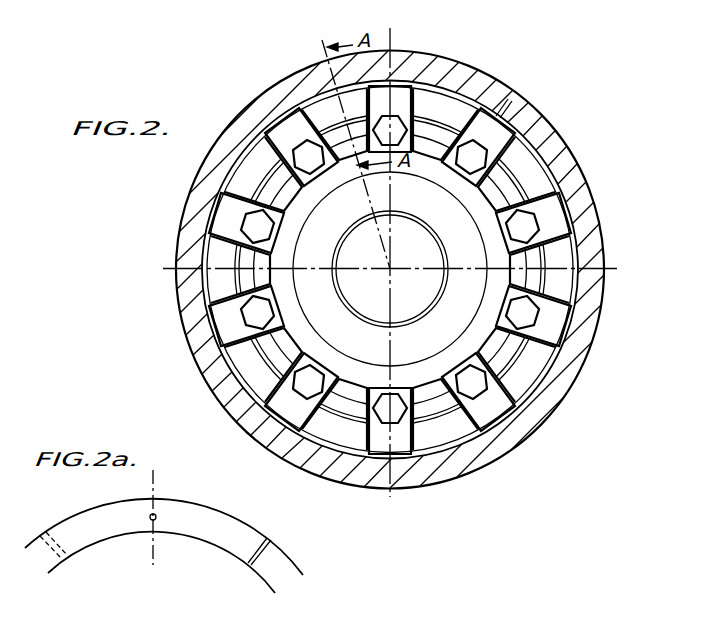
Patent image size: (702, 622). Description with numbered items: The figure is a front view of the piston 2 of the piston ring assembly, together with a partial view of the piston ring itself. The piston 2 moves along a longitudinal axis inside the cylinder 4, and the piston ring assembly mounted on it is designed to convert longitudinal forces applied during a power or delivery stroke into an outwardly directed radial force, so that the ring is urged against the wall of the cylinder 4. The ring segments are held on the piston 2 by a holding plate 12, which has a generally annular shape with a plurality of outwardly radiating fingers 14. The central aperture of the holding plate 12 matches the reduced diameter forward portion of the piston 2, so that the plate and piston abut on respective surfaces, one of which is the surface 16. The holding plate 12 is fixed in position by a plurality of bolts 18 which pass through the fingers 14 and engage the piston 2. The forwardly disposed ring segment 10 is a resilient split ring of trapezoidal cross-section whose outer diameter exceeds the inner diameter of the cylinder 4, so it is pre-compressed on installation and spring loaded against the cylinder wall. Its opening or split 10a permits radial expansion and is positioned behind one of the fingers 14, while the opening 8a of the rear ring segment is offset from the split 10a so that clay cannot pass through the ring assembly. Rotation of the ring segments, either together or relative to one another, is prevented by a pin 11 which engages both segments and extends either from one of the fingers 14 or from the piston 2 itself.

In FIG. 2, the piston 2 is at (421, 260).
In FIG. 2, the cylinder 4 is at (298, 82).
In FIG. 2, the ring segment 10 is at (260, 153).
In FIG. 2, the opening 10a is at (510, 100).
In FIG. 2a, the opening 10a is at (270, 540).
In FIG. 2a, the pin 11 is at (156, 514).
In FIG. 2, the holding plate 12 is at (245, 348).
In FIG. 2, the fingers 14 is at (222, 263).
In FIG. 2, the surface 16 is at (243, 386).
In FIG. 2, the bolts 18 is at (258, 315).
In FIG. 2a, the opening 8a is at (40, 532).